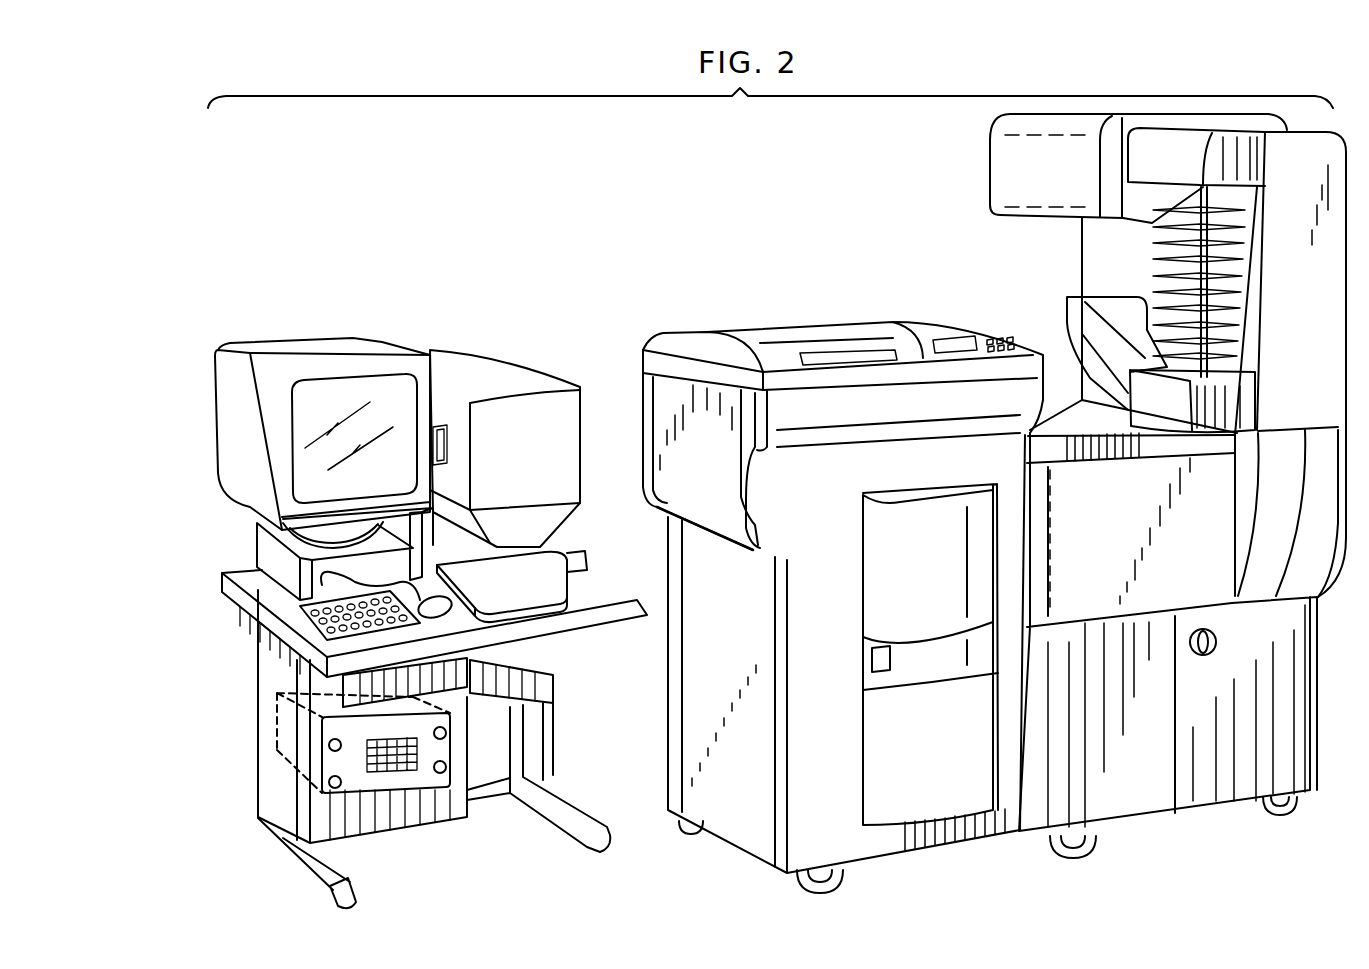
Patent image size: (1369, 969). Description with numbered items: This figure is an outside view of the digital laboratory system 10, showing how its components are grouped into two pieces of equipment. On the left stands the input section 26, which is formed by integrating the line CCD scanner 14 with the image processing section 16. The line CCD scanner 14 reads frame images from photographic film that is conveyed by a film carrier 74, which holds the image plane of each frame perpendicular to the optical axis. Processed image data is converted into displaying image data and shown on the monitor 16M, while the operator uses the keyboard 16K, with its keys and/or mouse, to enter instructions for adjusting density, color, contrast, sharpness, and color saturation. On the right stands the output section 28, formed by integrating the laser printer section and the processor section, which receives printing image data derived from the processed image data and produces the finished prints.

The digital laboratory system 10 is at (536, 216).
The input section 26 is at (348, 316).
The monitor 16M is at (232, 395).
The keyboard 16K is at (305, 622).
The image processing section 16 is at (277, 722).
The line CCD scanner 14 is at (553, 371).
The film carrier 74 is at (548, 560).
The output section 28 is at (793, 277).